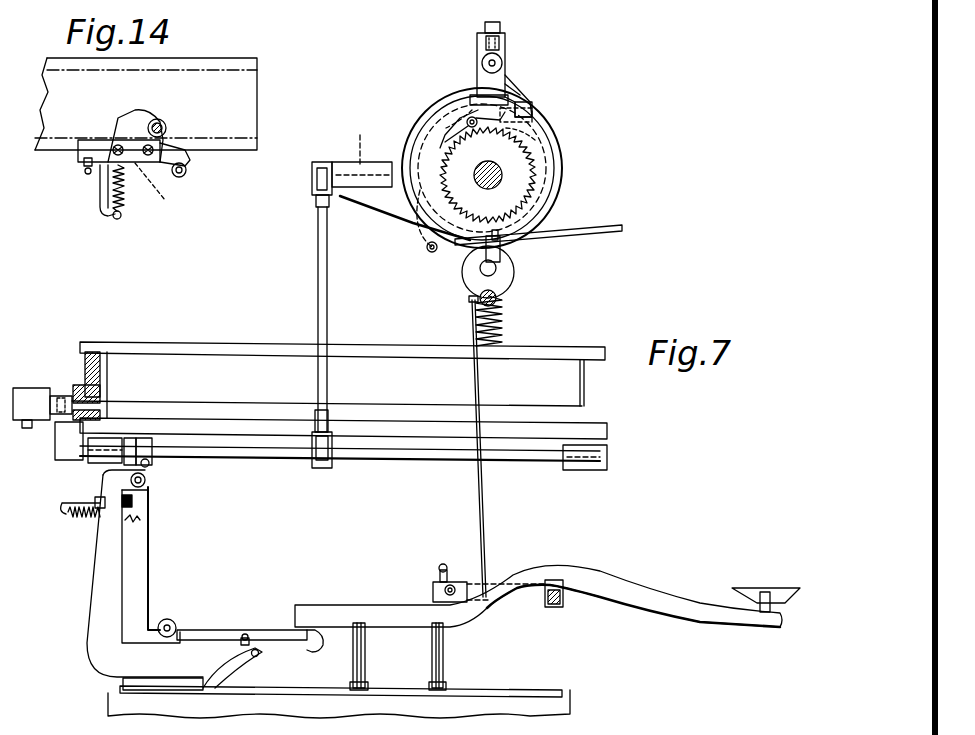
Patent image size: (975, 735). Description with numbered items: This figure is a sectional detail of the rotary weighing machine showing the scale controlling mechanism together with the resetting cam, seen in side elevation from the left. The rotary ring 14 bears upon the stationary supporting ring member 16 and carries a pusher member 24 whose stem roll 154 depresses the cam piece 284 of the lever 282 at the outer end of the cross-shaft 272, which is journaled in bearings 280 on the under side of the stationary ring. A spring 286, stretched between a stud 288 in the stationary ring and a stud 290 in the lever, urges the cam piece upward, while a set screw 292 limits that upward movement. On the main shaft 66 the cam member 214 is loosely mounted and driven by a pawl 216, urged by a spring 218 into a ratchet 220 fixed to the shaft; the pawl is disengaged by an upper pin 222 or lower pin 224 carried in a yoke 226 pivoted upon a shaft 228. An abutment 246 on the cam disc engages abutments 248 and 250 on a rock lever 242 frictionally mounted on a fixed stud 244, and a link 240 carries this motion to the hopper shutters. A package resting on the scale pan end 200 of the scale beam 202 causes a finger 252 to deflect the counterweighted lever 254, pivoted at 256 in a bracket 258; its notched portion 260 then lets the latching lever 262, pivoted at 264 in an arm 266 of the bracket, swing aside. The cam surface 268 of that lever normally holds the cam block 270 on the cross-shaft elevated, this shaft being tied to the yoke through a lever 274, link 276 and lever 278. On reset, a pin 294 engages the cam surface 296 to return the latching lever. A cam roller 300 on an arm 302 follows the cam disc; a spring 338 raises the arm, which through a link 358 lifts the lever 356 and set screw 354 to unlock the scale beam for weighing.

In FIG. 7, the ring 14 is at (103, 373).
In FIG. 14, the stationary supporting ring member 16 is at (48, 150).
In FIG. 7, the stationary supporting ring member 16 is at (600, 430).
In FIG. 7, the pusher member 24 is at (6, 400).
In FIG. 7, the main shaft 66 is at (503, 173).
In FIG. 14, the roll 154 is at (168, 118).
In FIG. 7, the roll 154 is at (55, 393).
In FIG. 7, the scale pan end 200 is at (742, 588).
In FIG. 7, the scale beam 202 is at (658, 610).
In FIG. 7, the cam member 214 is at (557, 143).
In FIG. 7, the pawl 216 is at (470, 97).
In FIG. 7, the spring 218 is at (445, 135).
In FIG. 7, the ratchet 220 is at (537, 187).
In FIG. 7, the upper pin 222 is at (512, 98).
In FIG. 7, the lower pin 224 is at (515, 247).
In FIG. 7, the yoke 226 is at (405, 128).
In FIG. 7, the shaft 228 is at (360, 152).
In FIG. 7, the link 240 is at (580, 235).
In FIG. 7, the rock lever 242 is at (478, 72).
In FIG. 7, the fixed stud 244 is at (483, 38).
In FIG. 7, the abutment 246 is at (537, 123).
In FIG. 7, the abutment 248 is at (530, 103).
In FIG. 7, the abutment 250 is at (425, 248).
In FIG. 7, the finger 252 is at (317, 652).
In FIG. 7, the counterweighted lever 254 is at (273, 630).
In FIG. 7, the pivot 256 is at (180, 623).
In FIG. 7, the bracket 258 is at (93, 660).
In FIG. 7, the notched portion 260 is at (147, 627).
In FIG. 7, the latching lever 262 is at (143, 555).
In FIG. 7, the pivot 264 is at (148, 488).
In FIG. 7, the arm 266 is at (143, 500).
In FIG. 7, the cam surface 268 is at (140, 440).
In FIG. 7, the cam block 270 is at (157, 462).
In FIG. 7, the cross-shaft 272 is at (263, 458).
In FIG. 7, the lever 274 is at (318, 468).
In FIG. 7, the link 276 is at (328, 315).
In FIG. 7, the lever 278 is at (312, 164).
In FIG. 7, the bearings 280 is at (570, 470).
In FIG. 14, the lever 282 is at (182, 147).
In FIG. 7, the lever 282 is at (95, 463).
In FIG. 14, the cam piece 284 is at (112, 140).
In FIG. 7, the cam piece 284 is at (58, 430).
In FIG. 14, the spring 286 is at (128, 198).
In FIG. 14, the stud 288 is at (150, 185).
In FIG. 14, the stud 290 is at (100, 218).
In FIG. 14, the set screw 292 is at (86, 172).
In FIG. 7, the pin 294 is at (57, 512).
In FIG. 7, the cam surface 296 is at (128, 447).
In FIG. 7, the cam roller 300 is at (470, 275).
In FIG. 7, the arm 302 is at (502, 287).
In FIG. 7, the spring 338 is at (503, 325).
In FIG. 7, the set screw 354 is at (433, 602).
In FIG. 7, the lever 356 is at (470, 585).
In FIG. 7, the link 358 is at (480, 508).